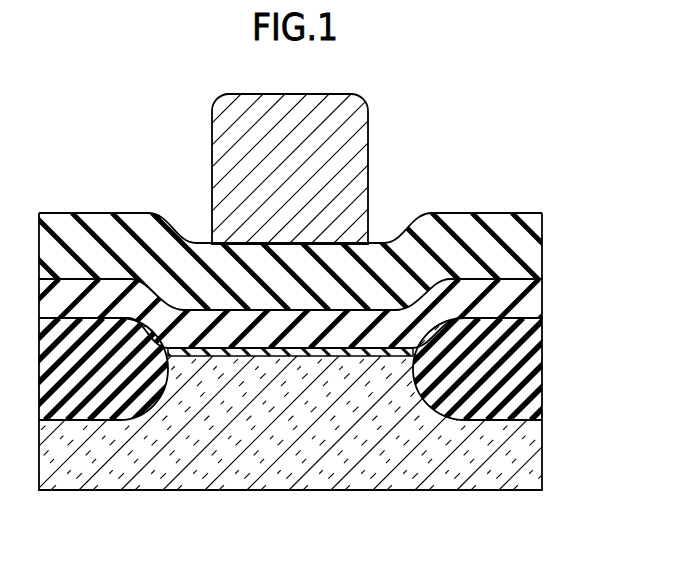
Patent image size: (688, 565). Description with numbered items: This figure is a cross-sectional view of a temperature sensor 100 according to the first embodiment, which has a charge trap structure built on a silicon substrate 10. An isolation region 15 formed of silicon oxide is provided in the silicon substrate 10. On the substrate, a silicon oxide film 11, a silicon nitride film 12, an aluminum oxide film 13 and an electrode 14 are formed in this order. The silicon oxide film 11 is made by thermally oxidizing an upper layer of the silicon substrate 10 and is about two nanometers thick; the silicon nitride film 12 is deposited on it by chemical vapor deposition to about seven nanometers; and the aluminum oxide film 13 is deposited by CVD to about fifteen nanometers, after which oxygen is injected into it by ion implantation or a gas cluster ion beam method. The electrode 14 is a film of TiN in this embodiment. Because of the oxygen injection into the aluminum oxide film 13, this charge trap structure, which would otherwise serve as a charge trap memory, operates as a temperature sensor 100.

The temperature sensor 100 is at (472, 96).
The silicon substrate 10 is at (525, 455).
The silicon oxide film 11 is at (362, 352).
The silicon nitride film 12 is at (530, 297).
The aluminum oxide film 13 is at (522, 249).
The electrode 14 is at (348, 141).
The isolation region 15 is at (522, 370).